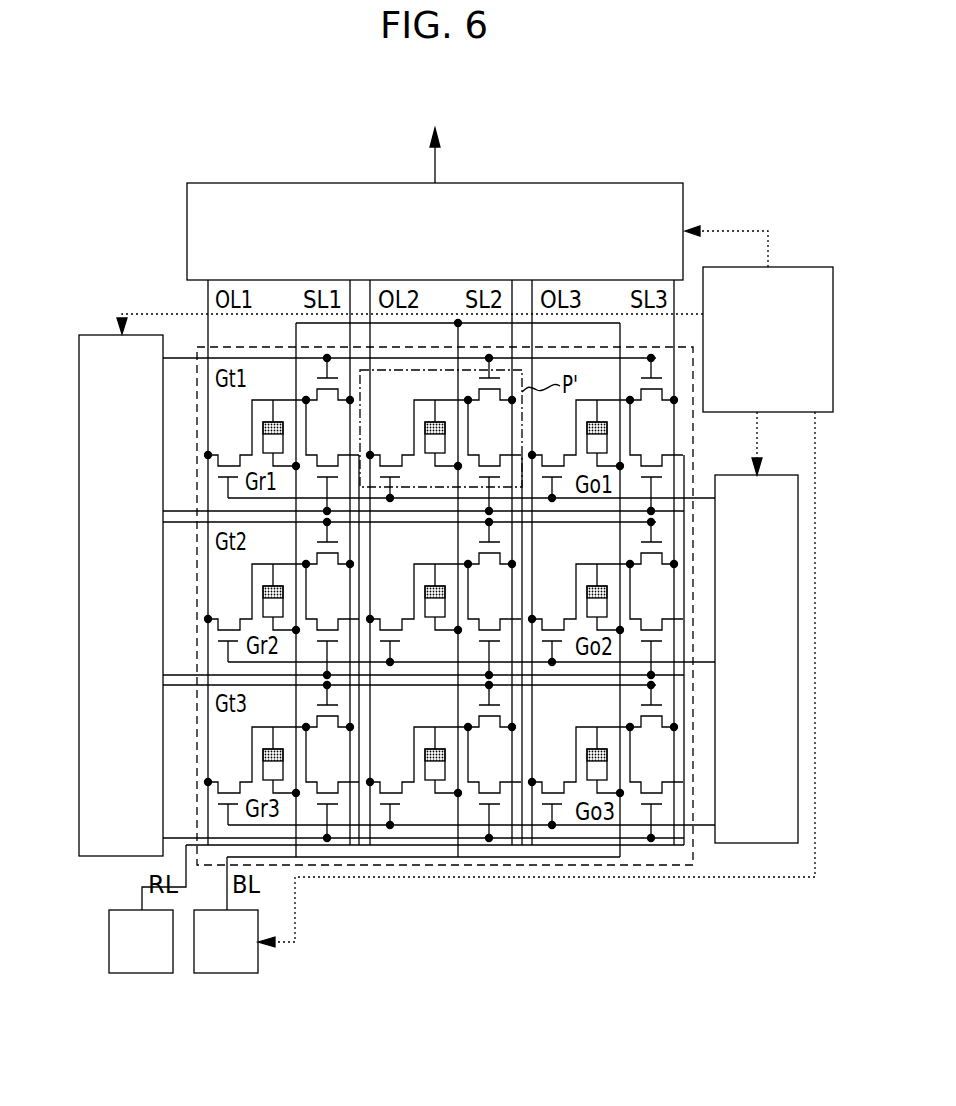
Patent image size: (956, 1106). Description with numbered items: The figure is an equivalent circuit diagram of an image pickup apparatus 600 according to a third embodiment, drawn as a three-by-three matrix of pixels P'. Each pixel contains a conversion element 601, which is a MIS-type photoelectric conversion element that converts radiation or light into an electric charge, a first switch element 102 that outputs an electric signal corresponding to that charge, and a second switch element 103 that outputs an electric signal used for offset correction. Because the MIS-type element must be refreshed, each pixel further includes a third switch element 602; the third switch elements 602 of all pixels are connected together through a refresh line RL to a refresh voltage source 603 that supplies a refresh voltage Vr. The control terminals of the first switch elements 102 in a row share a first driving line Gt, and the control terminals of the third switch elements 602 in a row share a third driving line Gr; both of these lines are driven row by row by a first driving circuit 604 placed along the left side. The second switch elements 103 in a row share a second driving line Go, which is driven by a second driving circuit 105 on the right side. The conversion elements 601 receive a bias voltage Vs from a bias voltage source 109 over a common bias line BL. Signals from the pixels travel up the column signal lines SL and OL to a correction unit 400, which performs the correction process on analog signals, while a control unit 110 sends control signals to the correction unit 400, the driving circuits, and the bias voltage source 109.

The correction unit 400 is at (676, 209).
The control unit 110 is at (797, 272).
The image pickup apparatus 600 is at (200, 346).
The conversion element 601 is at (269, 420).
The third switch element 602 is at (328, 618).
The first switch element 102 is at (658, 388).
The second switch element 103 is at (541, 784).
The first driving circuit 604 is at (80, 535).
The second driving circuit 105 is at (732, 486).
The refresh voltage source 603 is at (143, 973).
The bias voltage source 109 is at (228, 973).